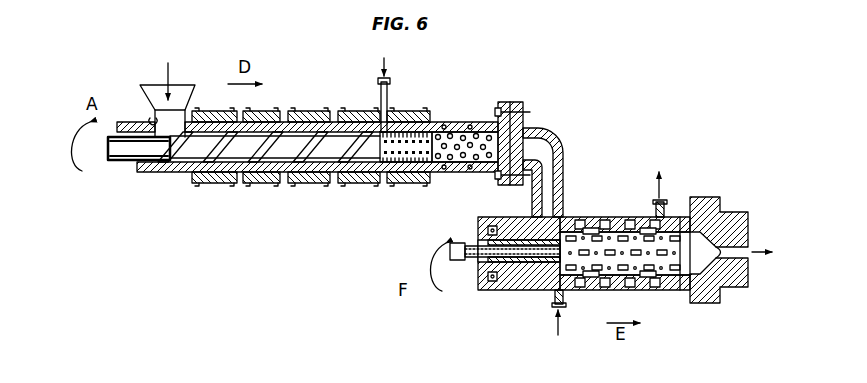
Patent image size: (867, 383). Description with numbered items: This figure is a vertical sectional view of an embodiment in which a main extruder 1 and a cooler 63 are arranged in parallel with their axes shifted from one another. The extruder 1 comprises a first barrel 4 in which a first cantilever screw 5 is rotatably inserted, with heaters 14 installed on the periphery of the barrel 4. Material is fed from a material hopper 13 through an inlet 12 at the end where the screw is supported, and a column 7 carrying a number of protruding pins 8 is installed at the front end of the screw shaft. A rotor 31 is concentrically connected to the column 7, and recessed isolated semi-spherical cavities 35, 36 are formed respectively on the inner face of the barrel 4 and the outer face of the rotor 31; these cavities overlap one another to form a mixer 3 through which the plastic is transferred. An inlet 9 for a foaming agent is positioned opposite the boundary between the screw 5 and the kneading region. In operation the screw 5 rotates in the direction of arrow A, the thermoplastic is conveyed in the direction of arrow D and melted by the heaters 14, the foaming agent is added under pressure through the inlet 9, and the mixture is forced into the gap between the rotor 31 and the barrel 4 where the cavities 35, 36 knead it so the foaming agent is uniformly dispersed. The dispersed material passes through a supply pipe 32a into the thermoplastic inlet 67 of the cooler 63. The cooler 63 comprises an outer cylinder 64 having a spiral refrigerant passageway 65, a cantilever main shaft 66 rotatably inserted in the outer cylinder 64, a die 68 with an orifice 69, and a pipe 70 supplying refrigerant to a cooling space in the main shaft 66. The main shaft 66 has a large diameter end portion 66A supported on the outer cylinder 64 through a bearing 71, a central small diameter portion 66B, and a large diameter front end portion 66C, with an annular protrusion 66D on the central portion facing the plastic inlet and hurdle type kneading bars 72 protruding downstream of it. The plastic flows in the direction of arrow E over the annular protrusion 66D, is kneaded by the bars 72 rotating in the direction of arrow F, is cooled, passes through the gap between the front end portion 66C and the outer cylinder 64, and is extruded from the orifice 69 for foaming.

The main extruder 1 is at (264, 80).
The mixer 3 is at (481, 92).
The first barrel 4 is at (180, 174).
The first cantilever screw 5 is at (206, 152).
The column 7 is at (387, 162).
The pins 8 is at (400, 110).
The inlet for foaming agent 9 is at (380, 88).
The inlet for materials 12 is at (153, 118).
The material hopper 13 is at (193, 102).
The heaters 14 is at (345, 106).
The rotor 31 is at (494, 144).
The pipe for supplying thermoplastic material 32a is at (555, 142).
The cavities of the barrel 35 is at (472, 120).
The cavities of the rotor 36 is at (444, 125).
The cooler 63 is at (643, 300).
The outer cylinder 64 is at (515, 290).
The spiral refrigerant passageway 65 is at (638, 220).
The cantilever main shaft 66 is at (612, 241).
The large diameter end portion 66A is at (545, 288).
The central small diameter portion 66B is at (612, 222).
The large diameter front end portion 66C is at (678, 232).
The annular protrusion 66D is at (566, 280).
The thermoplastic inlet 67 is at (552, 214).
The die 68 is at (740, 212).
The orifice 69 is at (750, 260).
The pipe for supplying refrigerant 70 is at (454, 264).
The bearing 71 is at (497, 290).
The hurdle type kneading bars 72 is at (592, 228).